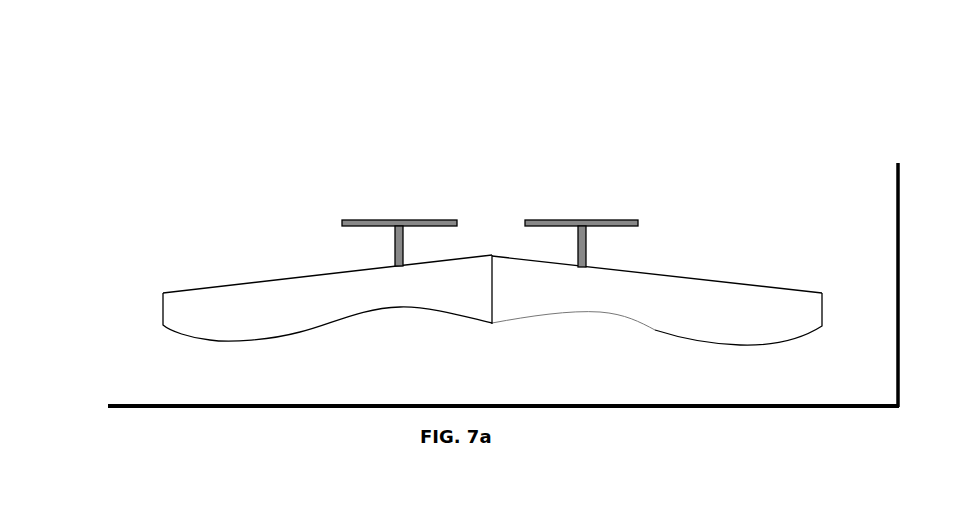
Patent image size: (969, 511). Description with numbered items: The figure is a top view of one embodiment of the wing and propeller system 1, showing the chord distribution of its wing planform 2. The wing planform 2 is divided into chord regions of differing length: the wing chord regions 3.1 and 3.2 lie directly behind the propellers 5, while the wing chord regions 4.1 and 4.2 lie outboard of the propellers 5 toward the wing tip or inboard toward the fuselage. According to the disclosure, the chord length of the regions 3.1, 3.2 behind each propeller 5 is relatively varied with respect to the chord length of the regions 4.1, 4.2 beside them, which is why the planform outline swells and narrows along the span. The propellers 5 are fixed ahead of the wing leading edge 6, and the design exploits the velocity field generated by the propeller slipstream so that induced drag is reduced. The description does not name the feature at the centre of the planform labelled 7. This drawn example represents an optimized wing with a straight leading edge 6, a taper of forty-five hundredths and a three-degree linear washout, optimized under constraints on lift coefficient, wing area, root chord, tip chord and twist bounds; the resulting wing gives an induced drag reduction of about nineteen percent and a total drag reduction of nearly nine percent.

The wing and propeller system 1 is at (762, 84).
The wing planform 2 is at (442, 293).
The wing chord region 3.1 is at (387, 307).
The wing chord region 3.2 is at (591, 312).
The wing chord region 4.1 is at (202, 314).
The wing chord region 4.2 is at (780, 329).
The propeller 5 is at (645, 216).
The wing leading edge 6 is at (390, 258).
The separating line 7 is at (481, 281).